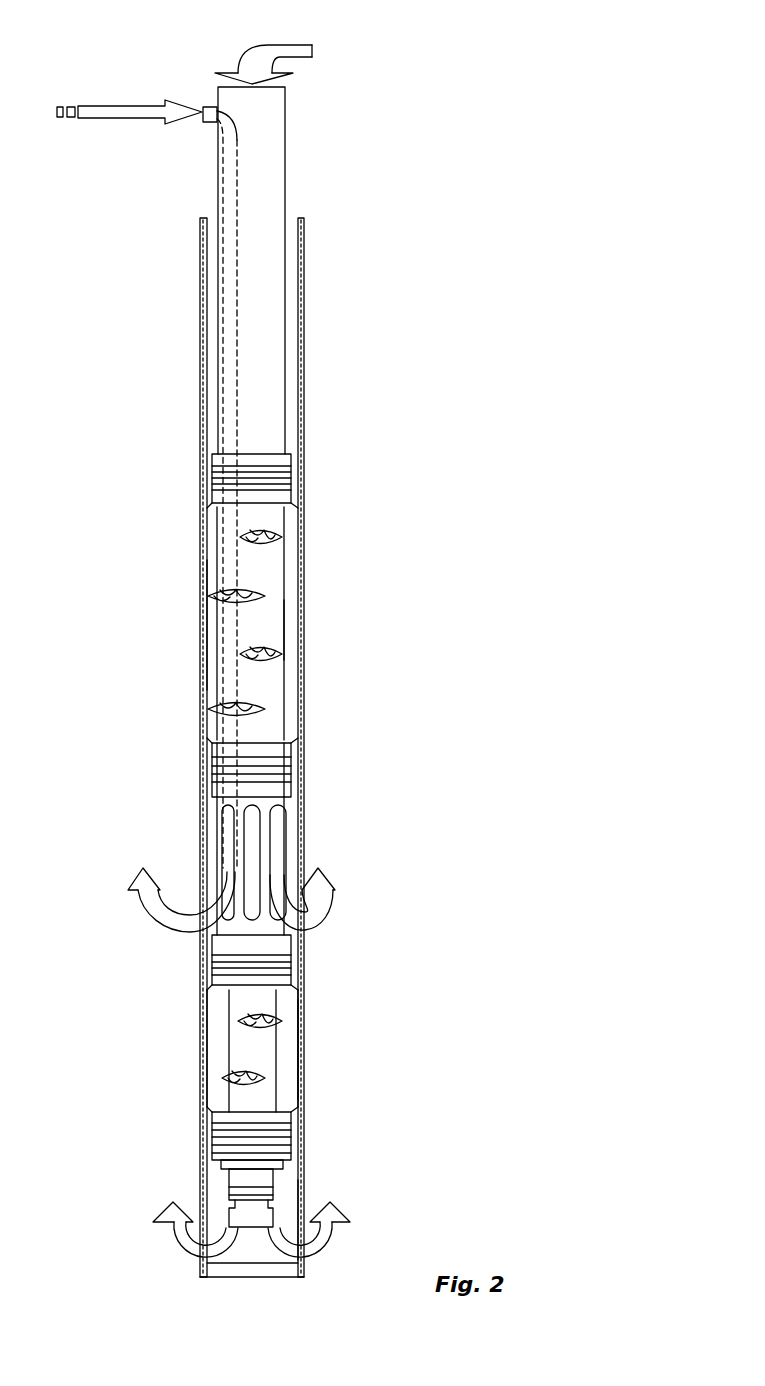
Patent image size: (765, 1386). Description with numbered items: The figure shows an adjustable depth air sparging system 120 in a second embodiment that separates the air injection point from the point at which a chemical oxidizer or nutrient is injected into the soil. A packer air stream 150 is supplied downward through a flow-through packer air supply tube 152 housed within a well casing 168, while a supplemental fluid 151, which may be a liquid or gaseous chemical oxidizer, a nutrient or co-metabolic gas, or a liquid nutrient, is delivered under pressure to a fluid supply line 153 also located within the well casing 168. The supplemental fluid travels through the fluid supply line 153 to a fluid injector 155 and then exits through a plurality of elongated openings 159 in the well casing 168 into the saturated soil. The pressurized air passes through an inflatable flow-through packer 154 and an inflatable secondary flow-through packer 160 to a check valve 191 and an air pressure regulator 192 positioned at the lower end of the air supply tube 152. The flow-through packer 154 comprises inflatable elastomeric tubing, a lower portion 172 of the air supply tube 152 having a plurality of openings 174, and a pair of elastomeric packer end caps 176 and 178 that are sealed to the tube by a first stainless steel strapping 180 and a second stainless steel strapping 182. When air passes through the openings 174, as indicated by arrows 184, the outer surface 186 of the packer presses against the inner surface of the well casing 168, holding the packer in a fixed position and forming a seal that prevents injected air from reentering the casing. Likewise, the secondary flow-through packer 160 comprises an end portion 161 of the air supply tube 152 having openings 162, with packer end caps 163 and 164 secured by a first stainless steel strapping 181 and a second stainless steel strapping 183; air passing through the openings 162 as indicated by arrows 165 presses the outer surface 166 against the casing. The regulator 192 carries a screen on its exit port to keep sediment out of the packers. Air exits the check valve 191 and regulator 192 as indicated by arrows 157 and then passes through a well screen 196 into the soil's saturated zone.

The adjustable depth air sparging system 120 is at (345, 188).
The packer air stream 150 is at (308, 44).
The supplemental fluid 151 is at (112, 102).
The flow-through packer air supply tube 152 is at (270, 142).
The fluid supply line 153 is at (230, 177).
The inflatable flow-through packer 154 is at (200, 624).
The fluid injector 155 is at (233, 872).
The arrows indicating air flow 157 is at (317, 882).
The elongated openings 159 is at (280, 838).
The inflatable secondary flow-through packer 160 is at (308, 1074).
The end portion of air supply tube 161 is at (228, 1038).
The openings 162 is at (260, 1012).
The packer end cap 163 is at (302, 937).
The packer end cap 164 is at (303, 1153).
The arrows indicating air flow 165 is at (282, 1018).
The outer surface of secondary packer 166 is at (287, 1103).
The well casing 168 is at (317, 286).
The lower portion of air supply tube 172 is at (288, 597).
The openings 174 is at (258, 587).
The packer end cap 176 is at (203, 456).
The packer end cap 178 is at (300, 743).
The first stainless steel strapping 180 is at (288, 490).
The first stainless steel strapping 181 is at (215, 950).
The second stainless steel strapping 182 is at (212, 777).
The second stainless steel strapping 183 is at (207, 1123).
The arrows indicating air flow 184 is at (278, 653).
The outer surface of packer 186 is at (284, 631).
The check valve 191 is at (277, 1178).
The air pressure regulator 192 is at (230, 1212).
The well screen 196 is at (303, 1200).